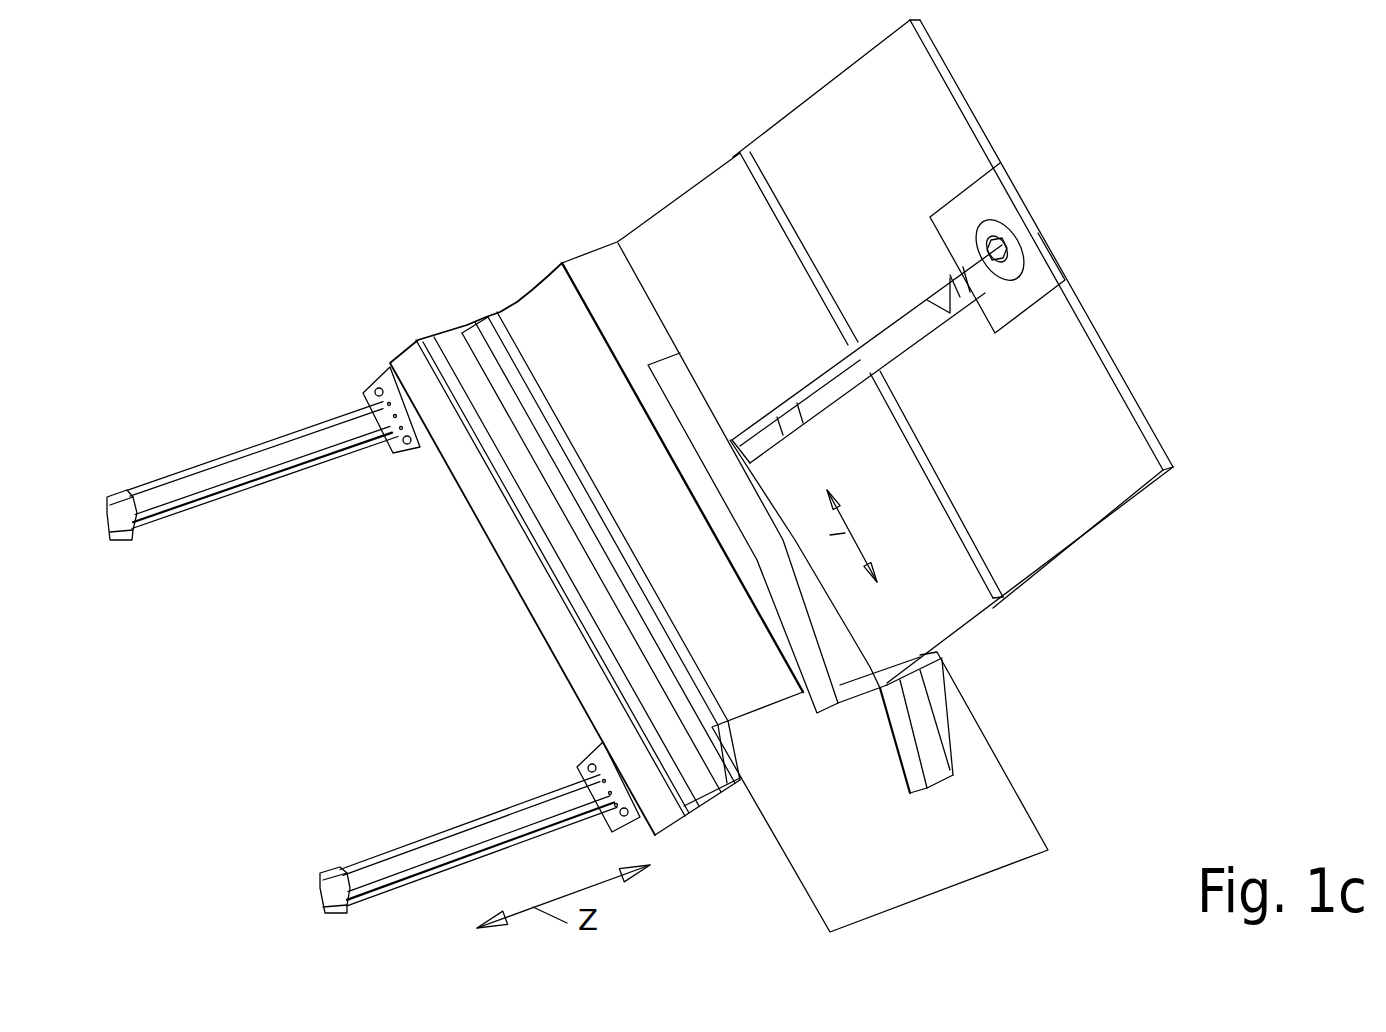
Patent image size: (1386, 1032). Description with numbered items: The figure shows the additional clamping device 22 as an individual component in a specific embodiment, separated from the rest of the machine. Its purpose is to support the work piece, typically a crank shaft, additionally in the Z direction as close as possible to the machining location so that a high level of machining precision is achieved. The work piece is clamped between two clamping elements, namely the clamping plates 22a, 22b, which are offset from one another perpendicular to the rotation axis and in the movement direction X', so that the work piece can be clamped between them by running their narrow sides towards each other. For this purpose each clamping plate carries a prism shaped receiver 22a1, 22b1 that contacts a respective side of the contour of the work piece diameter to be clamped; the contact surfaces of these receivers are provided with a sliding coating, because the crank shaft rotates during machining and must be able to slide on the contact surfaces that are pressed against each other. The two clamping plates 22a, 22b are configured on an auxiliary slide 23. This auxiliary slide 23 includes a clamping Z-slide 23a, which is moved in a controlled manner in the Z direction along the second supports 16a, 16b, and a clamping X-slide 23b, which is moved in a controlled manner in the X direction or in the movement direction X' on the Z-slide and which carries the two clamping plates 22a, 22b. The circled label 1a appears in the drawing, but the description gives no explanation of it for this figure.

The machine tool / workstation 1a is at (702, 759).
The Z support 16a is at (187, 488).
The Z support 16b is at (397, 865).
The additional clamping device 22 is at (1133, 577).
The clamping plate 22a is at (821, 182).
The prism shaped receiver 22a1 is at (983, 197).
The clamping plate 22b is at (950, 484).
The prism shaped receiver 22b1 is at (1028, 277).
The auxiliary slide 23 is at (479, 222).
The clamping Z-slide 23a is at (413, 375).
The clamping X-slide 23b is at (660, 479).